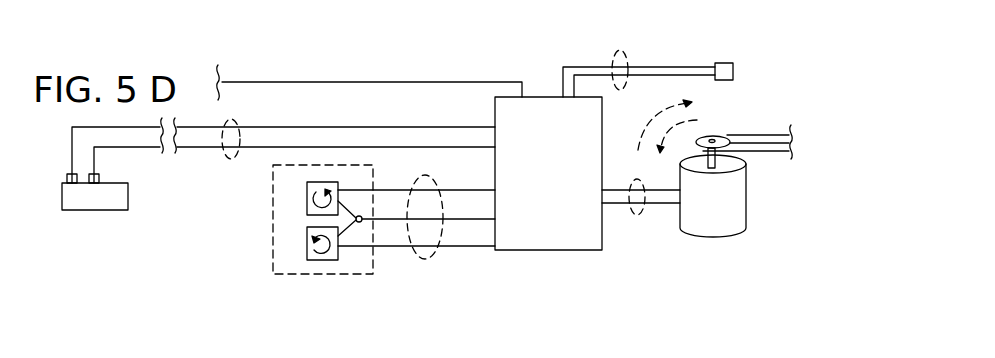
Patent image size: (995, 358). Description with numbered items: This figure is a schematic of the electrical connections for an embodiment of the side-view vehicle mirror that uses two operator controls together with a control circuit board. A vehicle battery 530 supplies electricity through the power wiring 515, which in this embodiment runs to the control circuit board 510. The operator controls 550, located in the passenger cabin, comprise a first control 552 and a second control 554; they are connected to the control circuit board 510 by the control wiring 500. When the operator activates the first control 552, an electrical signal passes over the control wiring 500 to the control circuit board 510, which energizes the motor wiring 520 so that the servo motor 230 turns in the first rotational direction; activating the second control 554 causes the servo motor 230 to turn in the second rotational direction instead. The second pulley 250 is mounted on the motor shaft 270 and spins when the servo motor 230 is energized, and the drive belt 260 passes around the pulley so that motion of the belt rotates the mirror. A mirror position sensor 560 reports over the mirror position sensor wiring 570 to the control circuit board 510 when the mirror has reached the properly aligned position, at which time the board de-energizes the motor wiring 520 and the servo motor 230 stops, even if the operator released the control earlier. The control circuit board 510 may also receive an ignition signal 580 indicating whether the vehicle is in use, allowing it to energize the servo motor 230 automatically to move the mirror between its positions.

The servo motor 230 is at (725, 225).
The second pulley 250 is at (712, 135).
The drive belt 260 is at (762, 148).
The motor shaft 270 is at (713, 168).
The control wiring 500 is at (425, 258).
The control circuit board 510 is at (590, 235).
The power wiring 515 is at (230, 160).
The motor wiring 520 is at (637, 217).
The vehicle battery 530 is at (90, 198).
The operator controls 550 is at (350, 275).
The first control 552 is at (323, 183).
The second control 554 is at (318, 260).
The mirror position sensor 560 is at (725, 60).
The mirror position sensor wiring 570 is at (623, 53).
The ignition signal 580 is at (333, 80).